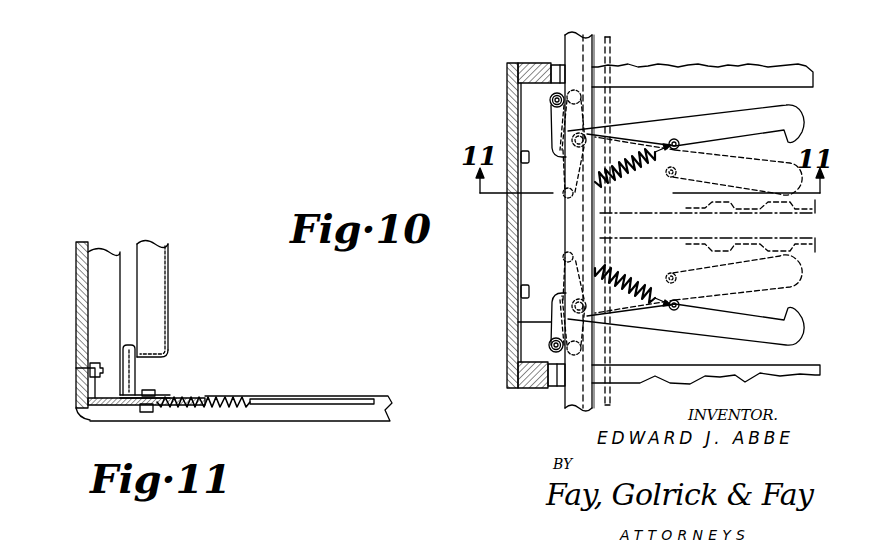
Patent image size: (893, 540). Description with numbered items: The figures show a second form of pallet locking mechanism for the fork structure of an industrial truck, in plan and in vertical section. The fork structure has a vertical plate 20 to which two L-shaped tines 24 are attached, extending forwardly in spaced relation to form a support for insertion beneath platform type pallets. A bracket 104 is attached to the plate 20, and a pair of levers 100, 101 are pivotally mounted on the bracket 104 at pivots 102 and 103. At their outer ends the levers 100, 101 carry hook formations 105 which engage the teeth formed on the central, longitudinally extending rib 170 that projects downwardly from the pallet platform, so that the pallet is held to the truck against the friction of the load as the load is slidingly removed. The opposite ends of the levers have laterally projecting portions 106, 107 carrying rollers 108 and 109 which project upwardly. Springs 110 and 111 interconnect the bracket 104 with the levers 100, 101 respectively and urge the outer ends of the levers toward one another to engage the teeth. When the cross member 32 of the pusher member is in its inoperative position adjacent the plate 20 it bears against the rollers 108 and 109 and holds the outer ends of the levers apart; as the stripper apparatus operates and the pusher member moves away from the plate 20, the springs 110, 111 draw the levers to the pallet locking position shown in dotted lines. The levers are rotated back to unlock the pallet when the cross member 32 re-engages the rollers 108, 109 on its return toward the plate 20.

In FIG. 10, the vertical plate 20 is at (513, 306).
In FIG. 11, the vertical plate 20 is at (77, 262).
In FIG. 10, the L-shaped tines 24 is at (546, 62).
In FIG. 11, the L-shaped tines 24 is at (282, 412).
In FIG. 10, the cross member 32 is at (568, 405).
In FIG. 11, the cross member 32 is at (168, 258).
In FIG. 10, the lever 100 is at (706, 127).
In FIG. 11, the lever 100 is at (311, 398).
In FIG. 10, the lever 101 is at (689, 334).
In FIG. 10, the pivot 102 is at (564, 158).
In FIG. 11, the pivot 102 is at (160, 390).
In FIG. 10, the pivot 103 is at (566, 285).
In FIG. 10, the bracket 104 is at (529, 226).
In FIG. 11, the bracket 104 is at (96, 412).
In FIG. 10, the hook formations 105 is at (781, 140).
In FIG. 10, the laterally projecting portion 106 is at (551, 120).
In FIG. 10, the laterally projecting portion 107 is at (549, 347).
In FIG. 10, the roller 108 is at (549, 100).
In FIG. 11, the roller 108 is at (136, 356).
In FIG. 10, the roller 109 is at (518, 363).
In FIG. 10, the spring 110 is at (628, 163).
In FIG. 11, the spring 110 is at (204, 414).
In FIG. 10, the spring 111 is at (620, 278).
In FIG. 10, the rib 170 is at (670, 217).